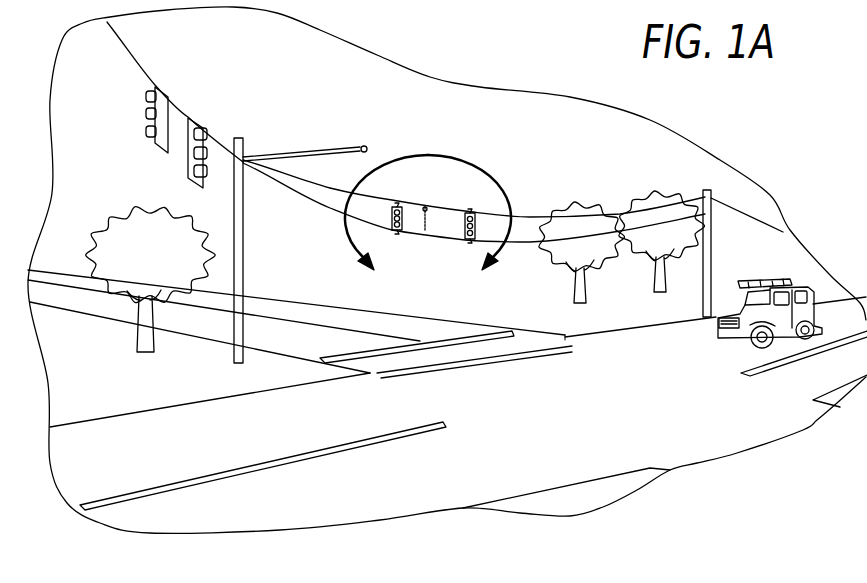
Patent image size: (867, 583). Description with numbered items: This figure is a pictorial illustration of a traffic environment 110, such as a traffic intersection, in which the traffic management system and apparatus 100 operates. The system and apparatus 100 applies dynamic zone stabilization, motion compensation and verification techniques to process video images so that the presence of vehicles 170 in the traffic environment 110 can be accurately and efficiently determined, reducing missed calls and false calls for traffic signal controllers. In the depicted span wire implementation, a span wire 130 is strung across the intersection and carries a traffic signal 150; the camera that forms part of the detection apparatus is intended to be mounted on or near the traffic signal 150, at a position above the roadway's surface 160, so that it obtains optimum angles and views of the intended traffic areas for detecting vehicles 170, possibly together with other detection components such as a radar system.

The traffic management system and apparatus 100 is at (427, 134).
The traffic environment 110 is at (705, 475).
The span wire 130 is at (320, 187).
The traffic signal 150 is at (473, 182).
The roadway's surface 160 is at (565, 357).
The vehicles 170 is at (773, 306).